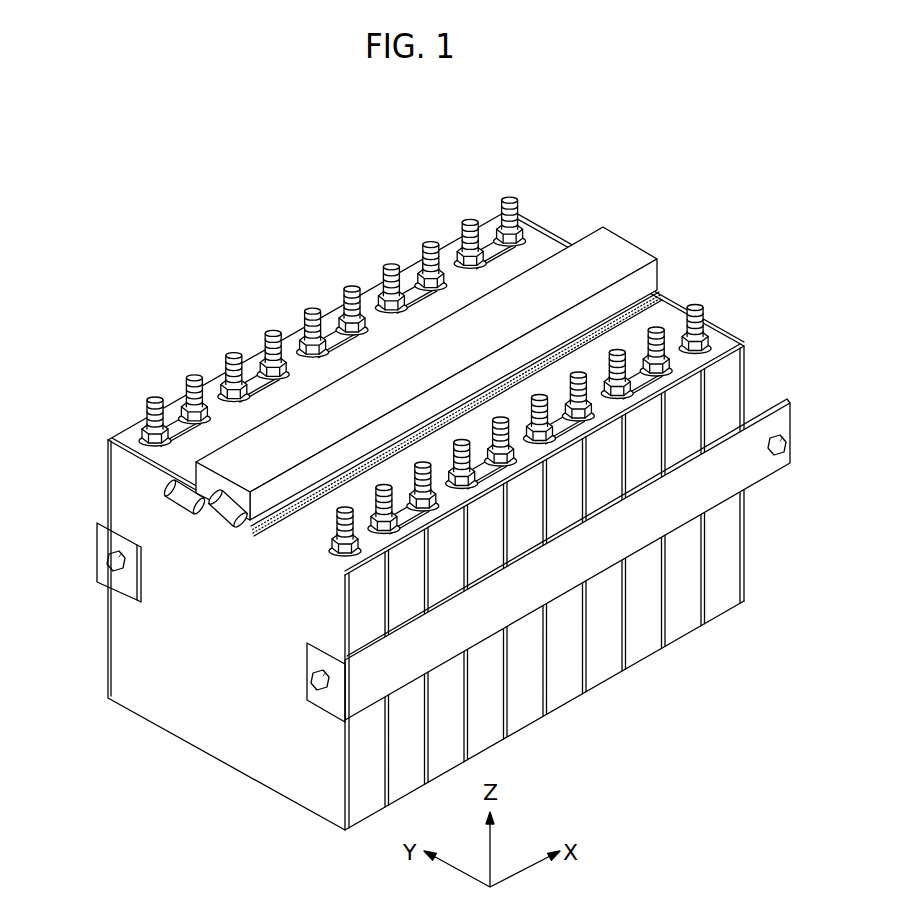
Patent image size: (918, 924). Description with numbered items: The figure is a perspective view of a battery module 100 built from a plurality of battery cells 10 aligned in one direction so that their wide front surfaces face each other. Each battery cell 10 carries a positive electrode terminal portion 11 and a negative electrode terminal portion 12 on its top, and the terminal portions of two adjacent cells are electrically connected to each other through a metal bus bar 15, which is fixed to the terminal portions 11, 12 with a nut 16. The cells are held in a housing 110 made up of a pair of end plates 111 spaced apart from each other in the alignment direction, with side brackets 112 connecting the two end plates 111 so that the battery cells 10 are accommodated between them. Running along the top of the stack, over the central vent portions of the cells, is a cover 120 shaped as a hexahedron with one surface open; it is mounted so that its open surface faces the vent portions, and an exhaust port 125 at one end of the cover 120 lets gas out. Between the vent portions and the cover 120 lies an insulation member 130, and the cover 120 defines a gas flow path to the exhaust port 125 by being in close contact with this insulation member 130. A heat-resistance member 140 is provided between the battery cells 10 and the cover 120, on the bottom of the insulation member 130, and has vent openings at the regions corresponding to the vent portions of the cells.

The battery module 100 is at (165, 238).
The battery cell 10 is at (686, 607).
The positive electrode terminal portion 11 is at (511, 197).
The negative electrode terminal portion 12 is at (706, 302).
The bus bar 15 is at (178, 412).
The nut 16 is at (148, 418).
The housing 110 is at (207, 860).
The end plate 111 is at (158, 635).
The side bracket 112 is at (323, 700).
The cover 120 is at (623, 250).
The exhaust port 125 is at (172, 482).
The insulation member 130 is at (658, 293).
The heat-resistance member 140 is at (717, 343).